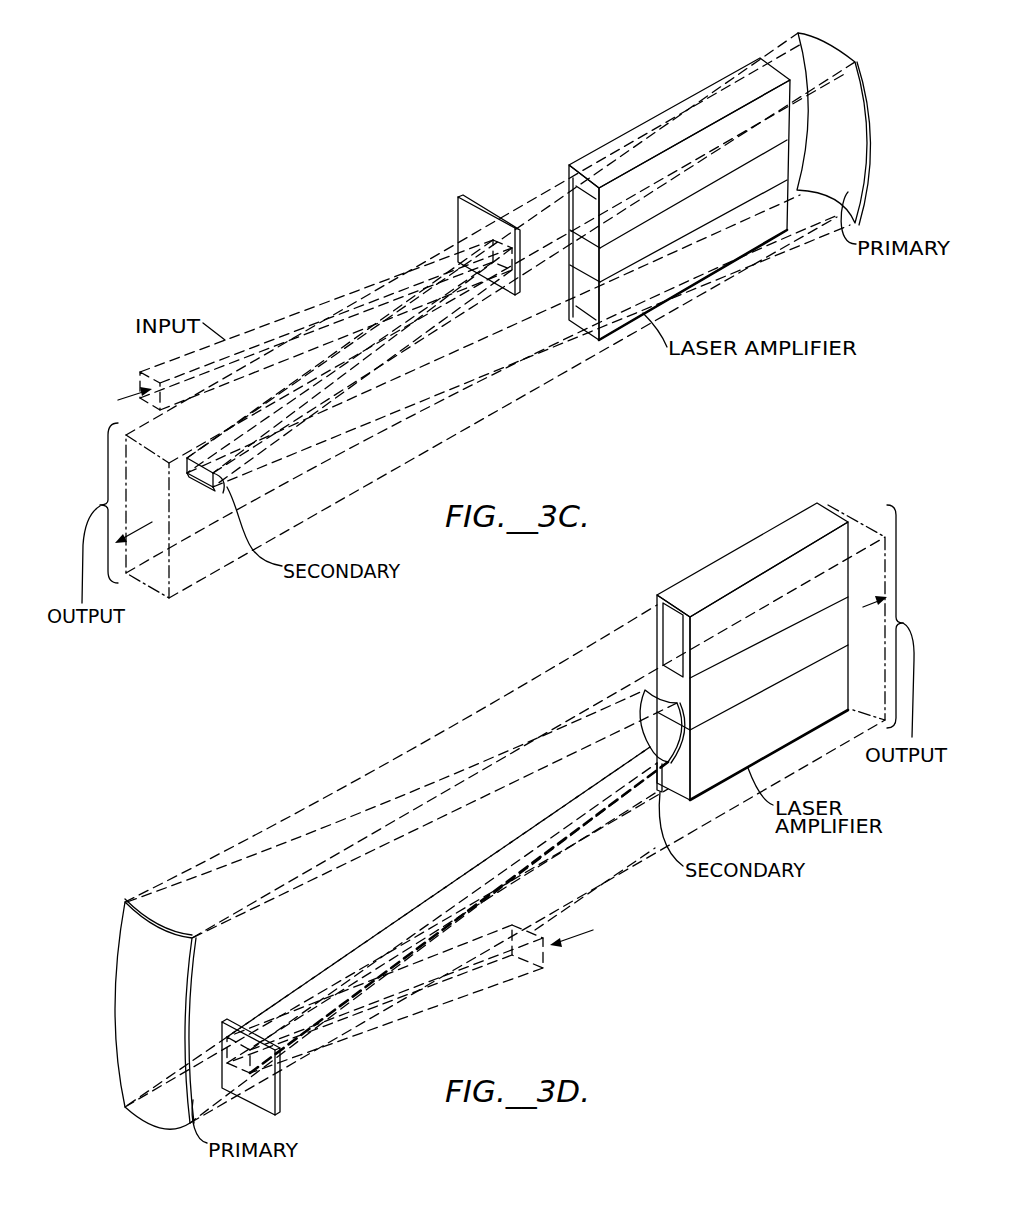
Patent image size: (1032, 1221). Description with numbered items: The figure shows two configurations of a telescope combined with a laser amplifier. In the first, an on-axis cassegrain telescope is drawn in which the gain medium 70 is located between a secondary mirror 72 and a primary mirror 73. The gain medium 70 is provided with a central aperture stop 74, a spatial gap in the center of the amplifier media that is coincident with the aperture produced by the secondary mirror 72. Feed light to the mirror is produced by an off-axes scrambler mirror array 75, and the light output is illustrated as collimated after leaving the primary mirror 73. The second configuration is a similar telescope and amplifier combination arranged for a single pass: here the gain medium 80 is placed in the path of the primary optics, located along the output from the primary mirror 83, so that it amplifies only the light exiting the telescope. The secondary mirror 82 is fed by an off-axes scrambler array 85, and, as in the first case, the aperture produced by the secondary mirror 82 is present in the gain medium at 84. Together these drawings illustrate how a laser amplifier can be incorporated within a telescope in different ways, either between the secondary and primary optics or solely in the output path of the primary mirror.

In FIG. 3C, the gain medium 70 is at (683, 98).
In FIG. 3C, the secondary mirror 72 is at (218, 495).
In FIG. 3C, the primary mirror 73 is at (830, 50).
In FIG. 3C, the central aperture stop 74 is at (570, 263).
In FIG. 3C, the off-axes scrambler mirror array 75 is at (472, 218).
In FIG. 3D, the gain medium 80 is at (782, 578).
In FIG. 3D, the secondary mirror 82 is at (662, 750).
In FIG. 3D, the primary mirror 83 is at (163, 1110).
In FIG. 3D, the aperture in gain medium 84 is at (818, 638).
In FIG. 3D, the off-axes scrambler array 85 is at (277, 1098).